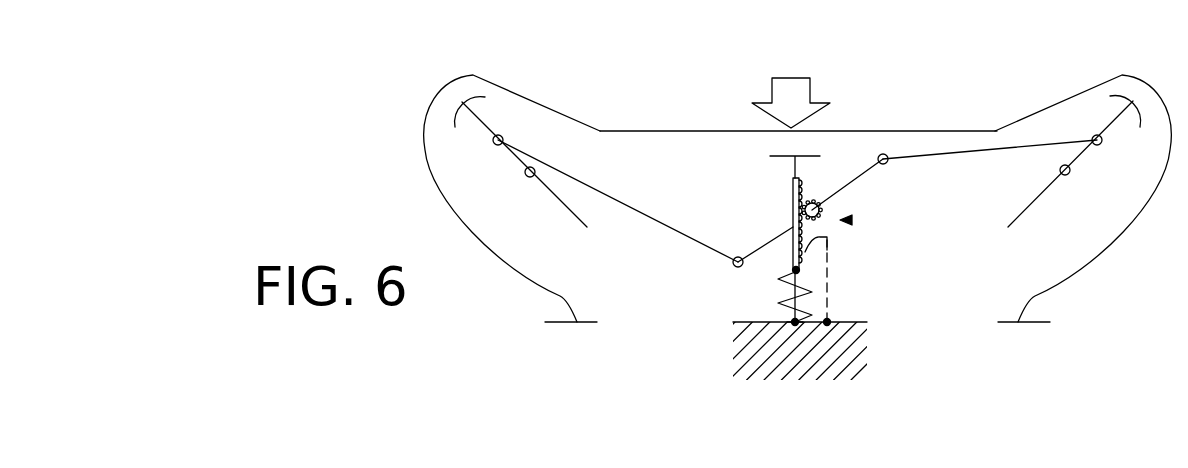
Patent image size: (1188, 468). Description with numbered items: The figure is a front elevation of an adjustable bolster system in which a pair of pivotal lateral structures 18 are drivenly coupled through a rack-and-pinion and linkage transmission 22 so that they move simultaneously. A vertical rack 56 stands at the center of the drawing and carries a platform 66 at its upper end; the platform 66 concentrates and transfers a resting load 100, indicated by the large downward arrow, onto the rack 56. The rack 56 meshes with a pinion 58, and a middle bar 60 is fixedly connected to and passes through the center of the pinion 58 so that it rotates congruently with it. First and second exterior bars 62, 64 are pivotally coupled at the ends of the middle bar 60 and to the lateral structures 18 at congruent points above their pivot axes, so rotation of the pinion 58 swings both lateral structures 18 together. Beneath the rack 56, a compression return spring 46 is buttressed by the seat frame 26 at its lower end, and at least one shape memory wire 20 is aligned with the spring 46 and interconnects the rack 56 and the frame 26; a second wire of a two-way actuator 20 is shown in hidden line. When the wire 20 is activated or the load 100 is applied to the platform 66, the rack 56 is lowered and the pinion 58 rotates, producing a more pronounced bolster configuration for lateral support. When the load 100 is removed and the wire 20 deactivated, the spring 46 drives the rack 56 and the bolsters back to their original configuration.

The resting load 100 is at (792, 78).
The lateral structures 18 is at (488, 123).
The second exterior bar 64 is at (617, 200).
The pinion 58 is at (817, 202).
The first exterior bar 62 is at (948, 155).
The platform 66 is at (773, 157).
The rack 56 is at (793, 208).
The middle bar 60 is at (860, 178).
The transmission 22 is at (848, 220).
The shape memory wire 20 is at (790, 285).
The compression return spring 46 is at (787, 305).
The seat frame 26 is at (865, 335).